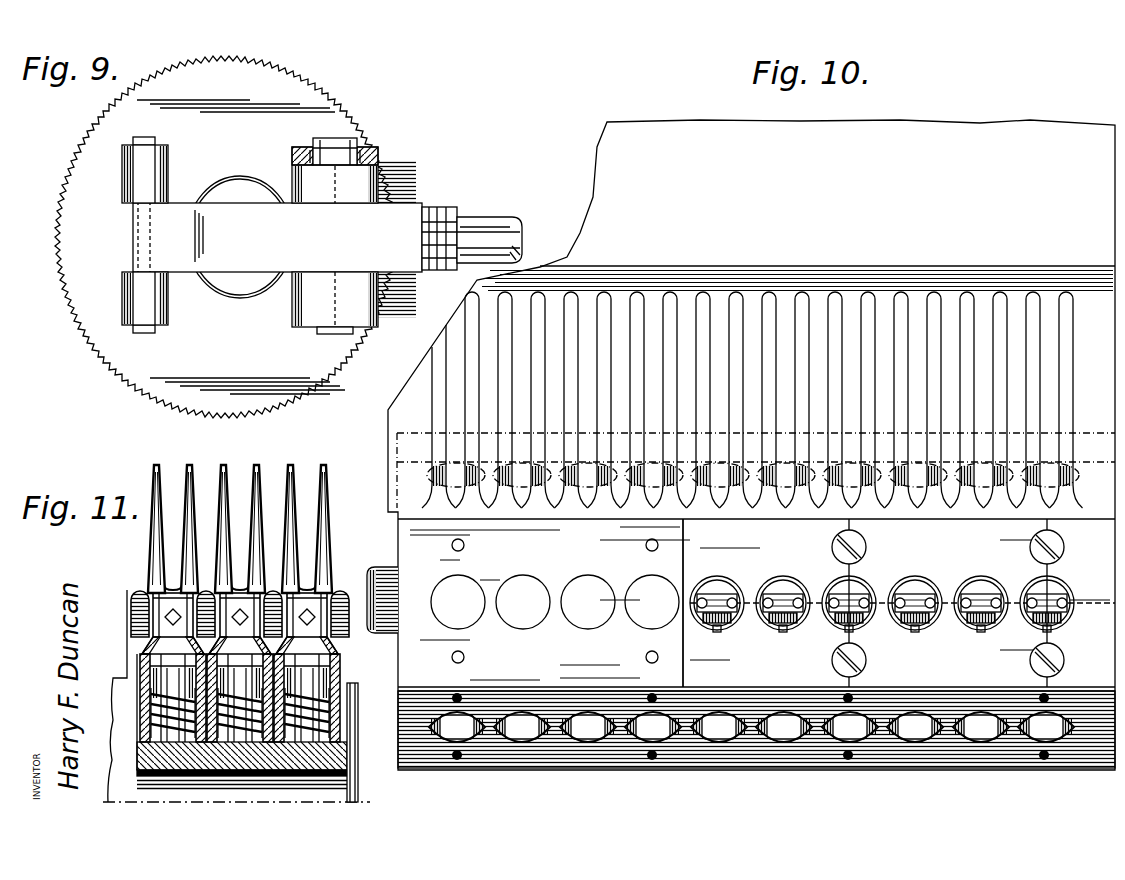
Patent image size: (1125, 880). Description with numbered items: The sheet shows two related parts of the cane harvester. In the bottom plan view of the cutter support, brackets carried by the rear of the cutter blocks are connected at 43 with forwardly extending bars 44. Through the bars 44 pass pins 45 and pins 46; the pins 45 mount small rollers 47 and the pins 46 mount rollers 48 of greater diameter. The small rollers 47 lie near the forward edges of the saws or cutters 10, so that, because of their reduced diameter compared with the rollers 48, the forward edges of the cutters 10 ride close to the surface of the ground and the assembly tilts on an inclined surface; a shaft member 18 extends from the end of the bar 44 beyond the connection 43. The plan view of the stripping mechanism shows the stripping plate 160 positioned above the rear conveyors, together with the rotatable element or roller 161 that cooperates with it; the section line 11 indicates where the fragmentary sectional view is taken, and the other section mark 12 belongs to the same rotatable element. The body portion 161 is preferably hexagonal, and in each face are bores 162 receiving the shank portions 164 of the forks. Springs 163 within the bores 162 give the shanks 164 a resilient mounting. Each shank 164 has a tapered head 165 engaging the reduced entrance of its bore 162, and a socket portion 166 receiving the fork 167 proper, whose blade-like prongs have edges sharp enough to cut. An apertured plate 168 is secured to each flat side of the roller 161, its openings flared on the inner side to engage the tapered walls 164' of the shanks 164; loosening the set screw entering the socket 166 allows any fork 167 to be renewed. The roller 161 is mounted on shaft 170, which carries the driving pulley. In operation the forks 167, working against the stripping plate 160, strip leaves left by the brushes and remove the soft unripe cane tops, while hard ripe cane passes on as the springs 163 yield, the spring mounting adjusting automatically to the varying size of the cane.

In FIG. 9, the saws or cutters 10 is at (56, 212).
In FIG. 9, the shaft 18 is at (507, 225).
In FIG. 9, the connection 43 is at (425, 210).
In FIG. 9, the forwardly extending bars 44 is at (277, 237).
In FIG. 9, the pins 45 is at (150, 333).
In FIG. 9, the pins 46 is at (395, 168).
In FIG. 9, the small rollers 47 is at (168, 170).
In FIG. 9, the rollers 48 is at (280, 322).
In FIG. 10, the section line 11— 11 is at (751, 638).
In FIG. 10, the section line 12 is at (848, 430).
In FIG. 10, the stripping plate 160 is at (420, 423).
In FIG. 10, the rotatable element or roller 161 is at (398, 522).
In FIG. 11, the rotatable element or roller 161 is at (337, 765).
In FIG. 10, the bores 162 is at (445, 470).
In FIG. 11, the bores 162 is at (140, 705).
In FIG. 11, the springs 163 is at (245, 762).
In FIG. 11, the shank portions 164 is at (349, 688).
In FIG. 11, the tapered walls 164' is at (329, 565).
In FIG. 10, the heads 165 is at (730, 552).
In FIG. 11, the heads 165 is at (340, 648).
In FIG. 10, the socket portion 166 is at (840, 580).
In FIG. 11, the socket portion 166 is at (177, 590).
In FIG. 10, the forks 167 is at (832, 627).
In FIG. 11, the forks 167 is at (290, 493).
In FIG. 10, the apertured plate 168 is at (690, 560).
In FIG. 11, the apertured plate 168 is at (152, 613).
In FIG. 10, the shaft 170 is at (398, 582).